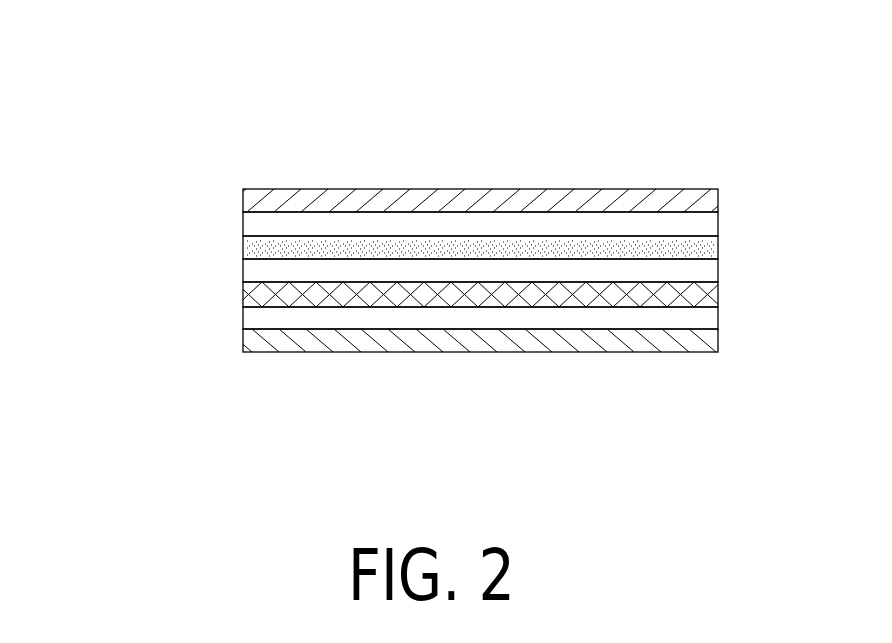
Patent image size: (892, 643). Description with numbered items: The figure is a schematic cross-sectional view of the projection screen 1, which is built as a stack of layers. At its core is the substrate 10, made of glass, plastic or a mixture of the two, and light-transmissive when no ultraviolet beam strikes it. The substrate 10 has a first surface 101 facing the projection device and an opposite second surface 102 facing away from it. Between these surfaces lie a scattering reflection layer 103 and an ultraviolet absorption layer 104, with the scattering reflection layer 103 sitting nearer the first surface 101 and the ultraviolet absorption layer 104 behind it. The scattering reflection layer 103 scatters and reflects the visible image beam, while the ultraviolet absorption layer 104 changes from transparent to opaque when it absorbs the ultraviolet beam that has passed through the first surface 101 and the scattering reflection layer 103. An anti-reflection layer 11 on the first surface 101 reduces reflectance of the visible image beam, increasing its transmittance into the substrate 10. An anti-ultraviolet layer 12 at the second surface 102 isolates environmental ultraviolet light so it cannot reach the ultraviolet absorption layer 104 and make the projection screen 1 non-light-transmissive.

The projection screen 1 is at (170, 67).
The substrate 10 is at (388, 265).
The first surface 101 is at (257, 219).
The second surface 102 is at (417, 322).
The scattering reflection layer 103 is at (250, 250).
The ultraviolet absorption layer 104 is at (255, 299).
The anti-reflection layer 11 is at (705, 199).
The anti-ultraviolet layer 12 is at (705, 342).